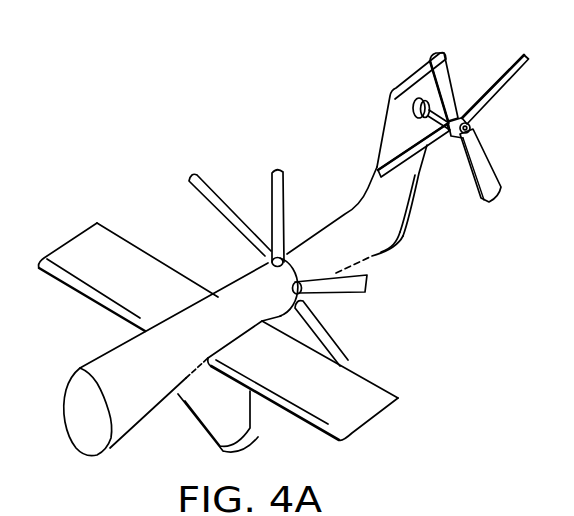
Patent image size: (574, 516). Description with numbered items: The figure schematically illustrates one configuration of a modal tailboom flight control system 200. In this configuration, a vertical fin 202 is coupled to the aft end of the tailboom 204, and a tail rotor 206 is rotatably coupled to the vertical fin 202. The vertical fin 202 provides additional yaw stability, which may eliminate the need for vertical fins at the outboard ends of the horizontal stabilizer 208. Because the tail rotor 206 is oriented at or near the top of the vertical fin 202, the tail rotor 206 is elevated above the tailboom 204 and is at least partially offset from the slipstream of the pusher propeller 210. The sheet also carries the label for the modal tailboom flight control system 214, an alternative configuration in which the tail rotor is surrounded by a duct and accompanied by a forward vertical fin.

The modal tailboom flight control system 200 is at (157, 79).
The vertical fin 202 is at (382, 122).
The tailboom 204 is at (90, 358).
The tail rotor 206 is at (495, 90).
The horizontal stabilizer 208 is at (83, 243).
The pusher propeller 210 is at (273, 183).
The modal tailboom flight control system 214 is at (378, 418).